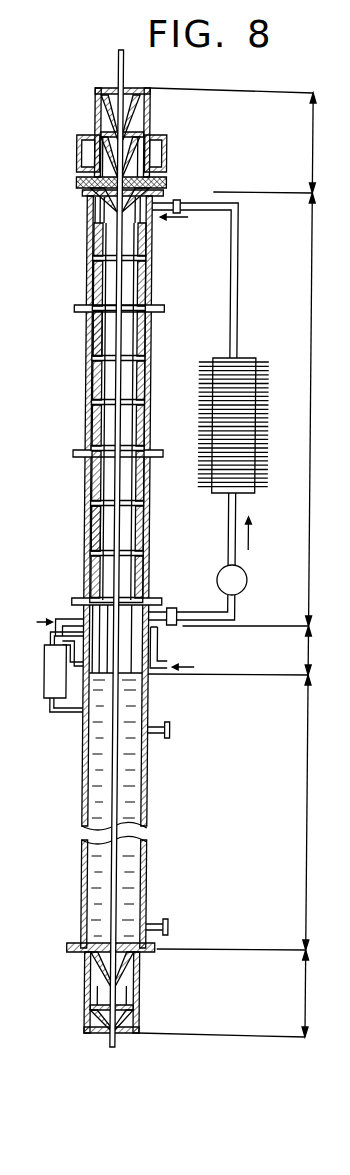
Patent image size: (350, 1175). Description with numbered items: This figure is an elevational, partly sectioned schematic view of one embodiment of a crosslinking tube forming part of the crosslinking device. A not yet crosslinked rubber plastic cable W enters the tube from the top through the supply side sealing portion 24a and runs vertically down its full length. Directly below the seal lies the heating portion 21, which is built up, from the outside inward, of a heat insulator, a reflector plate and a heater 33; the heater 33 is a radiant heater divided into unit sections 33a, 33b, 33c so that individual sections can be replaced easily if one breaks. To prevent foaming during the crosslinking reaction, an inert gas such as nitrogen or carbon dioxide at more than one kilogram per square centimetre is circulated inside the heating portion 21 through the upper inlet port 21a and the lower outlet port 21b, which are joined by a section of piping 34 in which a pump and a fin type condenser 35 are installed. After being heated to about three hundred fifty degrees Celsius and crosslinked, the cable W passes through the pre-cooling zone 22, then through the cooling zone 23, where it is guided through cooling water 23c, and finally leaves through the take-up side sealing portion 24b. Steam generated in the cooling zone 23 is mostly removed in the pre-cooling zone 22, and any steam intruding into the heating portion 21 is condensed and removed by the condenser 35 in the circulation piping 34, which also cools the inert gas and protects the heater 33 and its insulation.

The rubber plastic cable W is at (125, 70).
The supply side sealing portion 24a is at (239, 127).
The take-up side sealing portion 24b is at (236, 1012).
The heating portion 21 is at (309, 314).
The upper inlet port 21a is at (176, 200).
The lower outlet port 21b is at (177, 626).
The pre-cooling zone 22 is at (304, 659).
The cooling zone 23 is at (302, 834).
The cooling water 23c is at (96, 797).
The heater 33 is at (154, 292).
The heater unit section 33a is at (89, 245).
The heater unit section 33b is at (89, 337).
The heater unit section 33c is at (96, 523).
The piping 34 is at (241, 266).
The fin type condenser 35 is at (243, 358).